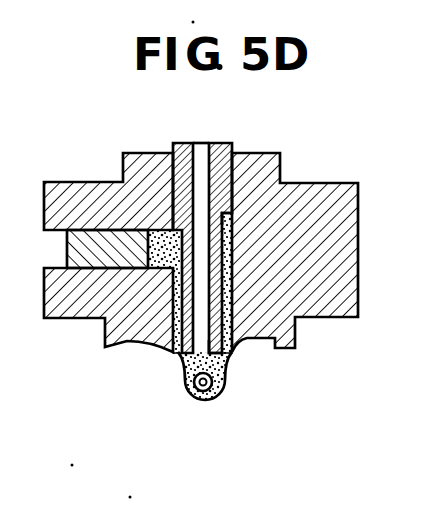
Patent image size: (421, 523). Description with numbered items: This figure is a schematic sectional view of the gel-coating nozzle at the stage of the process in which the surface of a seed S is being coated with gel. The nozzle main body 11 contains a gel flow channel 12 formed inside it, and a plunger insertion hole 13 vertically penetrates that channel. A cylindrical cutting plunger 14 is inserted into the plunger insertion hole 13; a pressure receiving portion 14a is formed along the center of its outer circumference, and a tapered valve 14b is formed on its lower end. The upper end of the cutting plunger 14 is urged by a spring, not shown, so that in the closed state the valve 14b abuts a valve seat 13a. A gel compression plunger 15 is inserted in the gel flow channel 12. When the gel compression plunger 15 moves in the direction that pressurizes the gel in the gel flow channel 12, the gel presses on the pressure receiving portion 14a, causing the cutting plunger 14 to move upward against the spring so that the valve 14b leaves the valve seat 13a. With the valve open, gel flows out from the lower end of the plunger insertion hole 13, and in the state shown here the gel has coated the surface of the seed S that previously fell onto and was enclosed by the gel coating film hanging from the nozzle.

The nozzle main body 11 is at (313, 183).
The gel flow channel 12 is at (158, 240).
The plunger insertion hole 13 is at (106, 329).
The valve seat 13a is at (183, 367).
The cutting plunger 14 is at (294, 239).
The pressure receiving portion 14a is at (228, 228).
The tapered valve 14b is at (227, 353).
The gel compression plunger 15 is at (94, 238).
The seed S is at (174, 397).